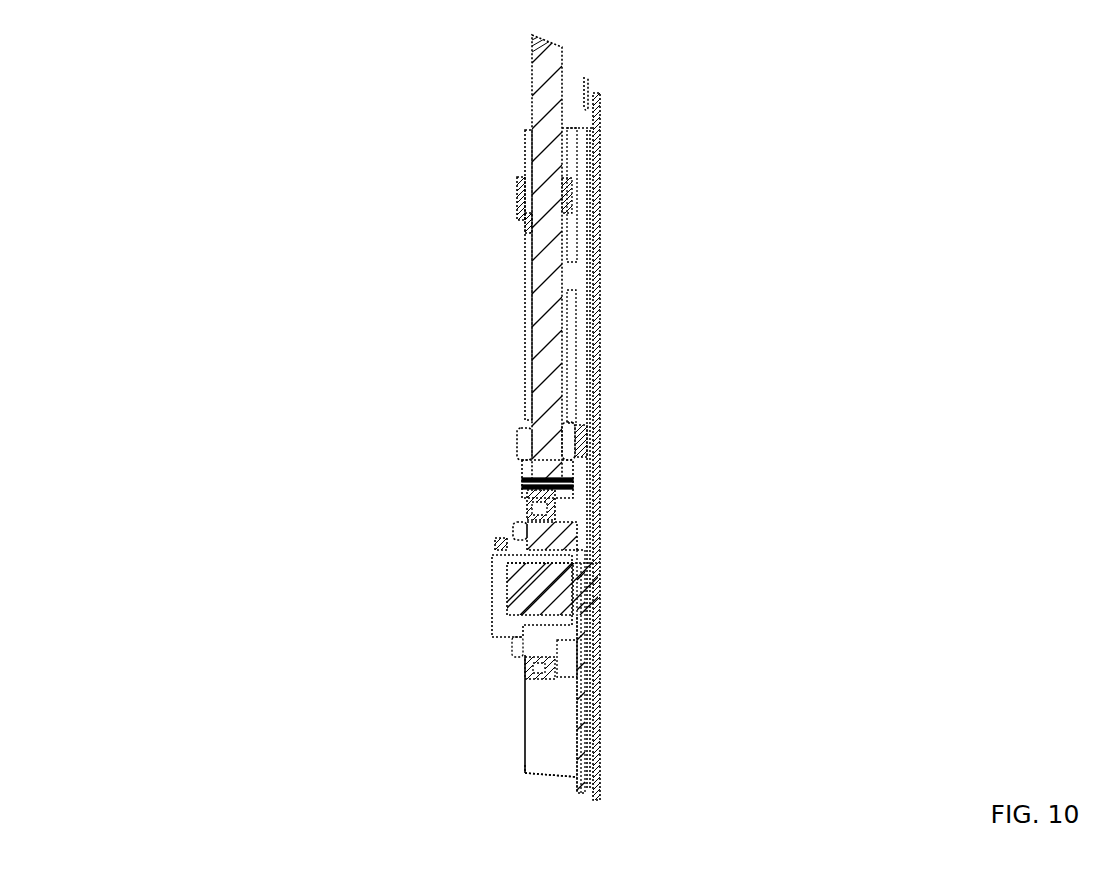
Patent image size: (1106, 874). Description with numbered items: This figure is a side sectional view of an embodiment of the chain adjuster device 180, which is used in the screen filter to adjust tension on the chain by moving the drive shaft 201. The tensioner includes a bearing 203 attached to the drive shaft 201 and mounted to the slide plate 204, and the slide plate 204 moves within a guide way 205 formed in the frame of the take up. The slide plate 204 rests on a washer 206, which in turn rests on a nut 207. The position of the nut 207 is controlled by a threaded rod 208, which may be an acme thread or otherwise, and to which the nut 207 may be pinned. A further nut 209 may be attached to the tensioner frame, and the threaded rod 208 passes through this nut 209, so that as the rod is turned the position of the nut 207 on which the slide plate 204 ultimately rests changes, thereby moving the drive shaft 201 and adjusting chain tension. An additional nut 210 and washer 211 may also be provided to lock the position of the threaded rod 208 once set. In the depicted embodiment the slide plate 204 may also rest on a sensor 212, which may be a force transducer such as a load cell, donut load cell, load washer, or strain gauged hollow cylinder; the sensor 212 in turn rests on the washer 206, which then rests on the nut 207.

The chain adjuster device 180 is at (258, 309).
The drive shaft 201 is at (498, 590).
The bearing 203 is at (482, 547).
The slide plate 204 is at (518, 418).
The guide way 205 is at (514, 767).
The washer 206 is at (514, 462).
The nut 207 is at (516, 472).
The threaded rod 208 is at (521, 295).
The nut 209 is at (516, 192).
The nut 210 is at (516, 248).
The washer 211 is at (516, 223).
The sensor 212 is at (509, 453).